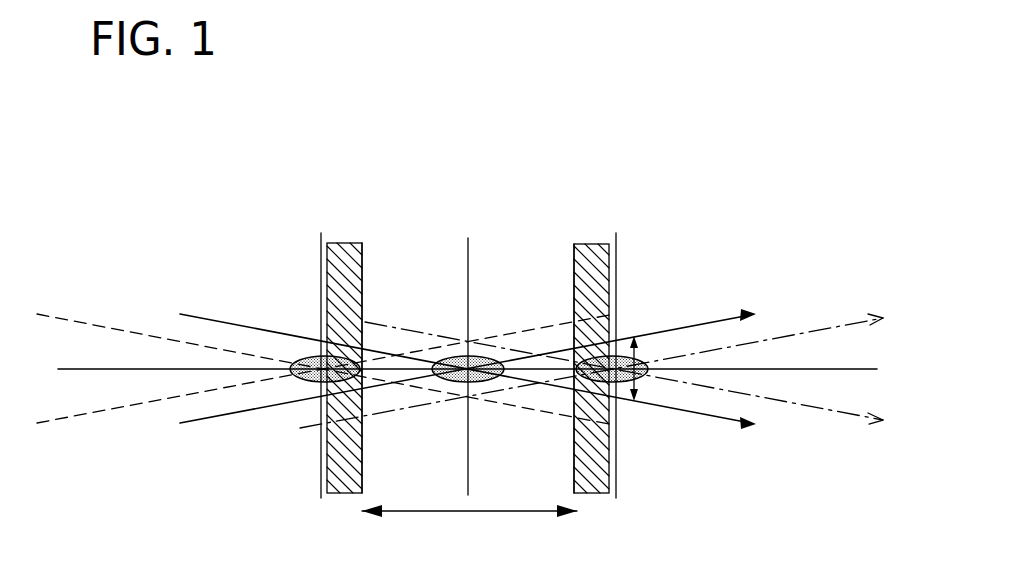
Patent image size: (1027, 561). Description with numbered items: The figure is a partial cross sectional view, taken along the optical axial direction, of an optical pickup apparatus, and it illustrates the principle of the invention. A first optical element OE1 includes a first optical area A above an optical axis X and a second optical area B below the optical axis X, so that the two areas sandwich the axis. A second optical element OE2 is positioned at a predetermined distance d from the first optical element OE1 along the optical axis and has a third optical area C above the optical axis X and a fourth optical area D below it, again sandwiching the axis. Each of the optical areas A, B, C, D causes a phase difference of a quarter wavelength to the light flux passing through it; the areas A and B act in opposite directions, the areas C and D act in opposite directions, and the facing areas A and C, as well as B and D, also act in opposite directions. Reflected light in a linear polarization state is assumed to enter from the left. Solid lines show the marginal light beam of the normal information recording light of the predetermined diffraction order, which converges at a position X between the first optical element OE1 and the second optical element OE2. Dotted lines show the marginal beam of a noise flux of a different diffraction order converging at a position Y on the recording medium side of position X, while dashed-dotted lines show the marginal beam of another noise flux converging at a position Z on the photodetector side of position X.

The first optical element OE1 is at (345, 243).
The second optical element OE2 is at (592, 244).
The optical axis X is at (921, 410).
The position Y is at (321, 233).
The position Z is at (616, 233).
The first optical area A is at (363, 270).
The second optical area B is at (363, 462).
The third optical area C is at (573, 262).
The fourth optical area D is at (574, 457).
The predetermined distance d is at (469, 524).